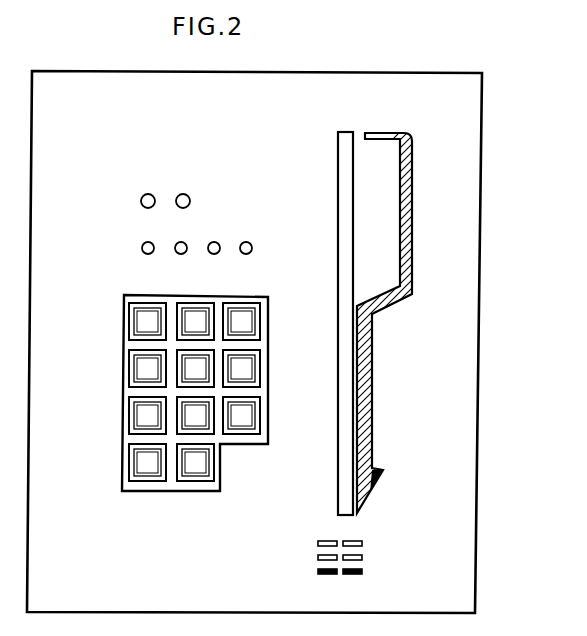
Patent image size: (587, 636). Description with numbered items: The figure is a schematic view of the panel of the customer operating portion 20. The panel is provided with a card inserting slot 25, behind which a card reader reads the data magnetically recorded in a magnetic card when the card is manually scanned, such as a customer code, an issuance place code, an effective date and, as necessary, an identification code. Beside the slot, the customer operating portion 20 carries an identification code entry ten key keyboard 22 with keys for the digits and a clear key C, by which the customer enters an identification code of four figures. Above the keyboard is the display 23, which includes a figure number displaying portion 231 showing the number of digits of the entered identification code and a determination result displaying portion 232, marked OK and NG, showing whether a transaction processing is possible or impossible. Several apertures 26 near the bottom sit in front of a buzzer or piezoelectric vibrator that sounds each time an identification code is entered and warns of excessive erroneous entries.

The customer operating portion 20 is at (506, 113).
The identification code entry ten key keyboard 22 is at (113, 338).
The display 23 is at (230, 189).
The figure number displaying portion 231 is at (260, 245).
The determination result displaying portion 232 is at (205, 198).
The card inserting slot 25 is at (375, 153).
The apertures 26 is at (363, 557).